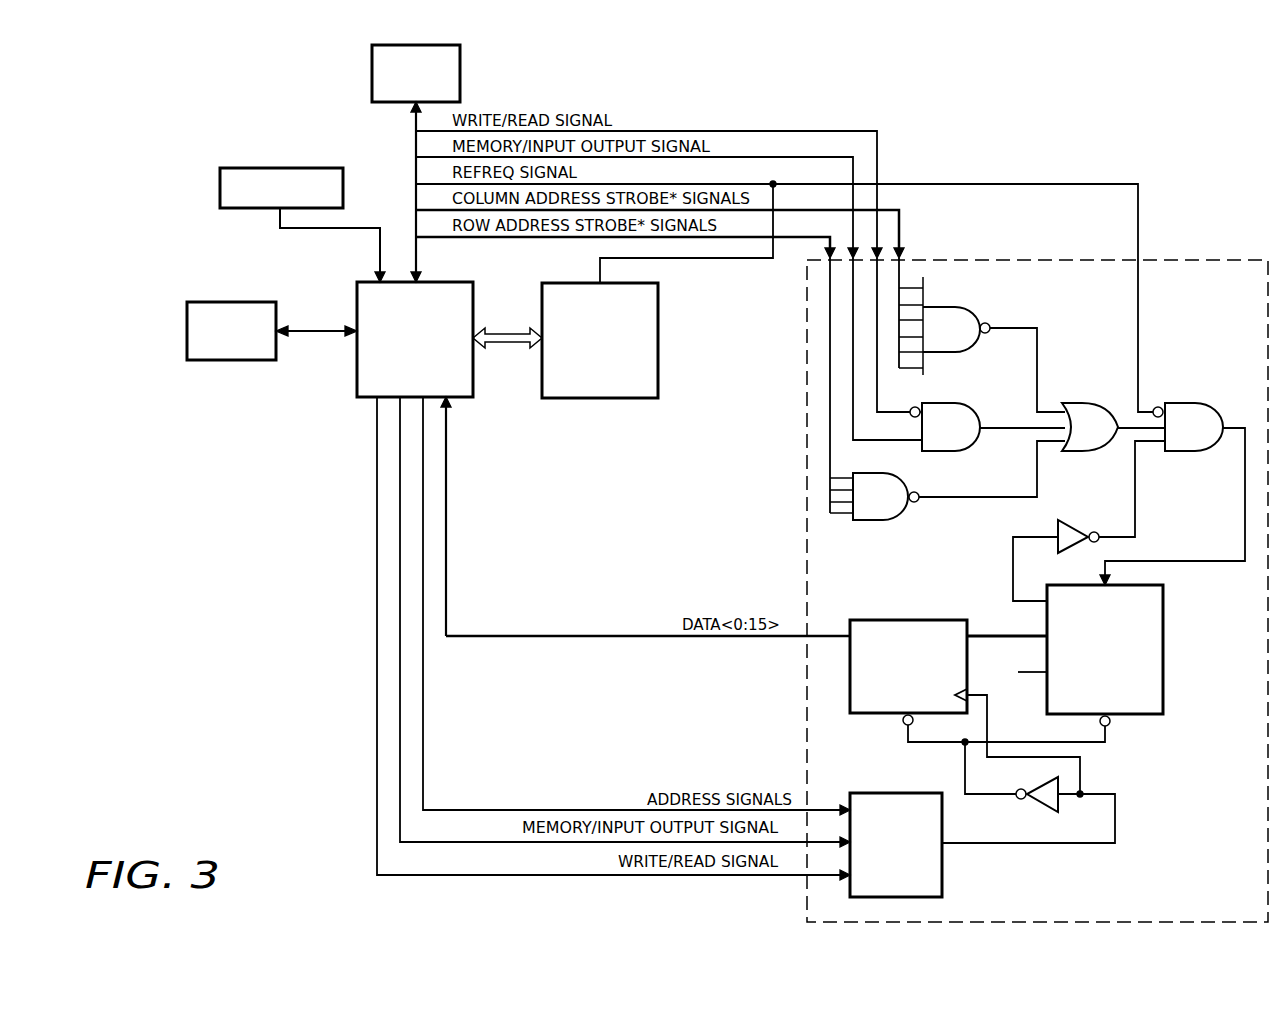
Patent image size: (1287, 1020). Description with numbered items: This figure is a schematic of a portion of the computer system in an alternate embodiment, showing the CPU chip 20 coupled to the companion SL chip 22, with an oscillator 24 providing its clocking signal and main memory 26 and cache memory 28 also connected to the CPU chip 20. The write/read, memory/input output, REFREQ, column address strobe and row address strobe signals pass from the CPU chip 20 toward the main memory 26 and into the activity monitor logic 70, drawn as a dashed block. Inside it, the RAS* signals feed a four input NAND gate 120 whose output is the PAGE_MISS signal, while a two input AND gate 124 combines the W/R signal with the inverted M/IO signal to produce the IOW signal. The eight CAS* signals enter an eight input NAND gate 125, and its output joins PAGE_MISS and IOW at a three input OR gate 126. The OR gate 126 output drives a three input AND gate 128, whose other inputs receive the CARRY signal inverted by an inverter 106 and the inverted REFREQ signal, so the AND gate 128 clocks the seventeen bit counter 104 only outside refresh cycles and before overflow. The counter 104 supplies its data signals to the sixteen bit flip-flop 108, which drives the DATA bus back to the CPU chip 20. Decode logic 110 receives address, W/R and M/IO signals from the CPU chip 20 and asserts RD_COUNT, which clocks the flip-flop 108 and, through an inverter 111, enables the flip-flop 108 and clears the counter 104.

The 386 SL CPU chip 20 is at (357, 377).
The 82360 SL chip 22 is at (658, 373).
The oscillator 24 is at (263, 168).
The main memory 26 is at (460, 62).
The cache memory 28 is at (232, 301).
The activity monitor logic 70 is at (1198, 260).
The 17 bit counter 104 is at (1165, 612).
The inverter 106 is at (1072, 520).
The 16 bit flip-flop 108 is at (893, 620).
The decode logic 110 is at (942, 880).
The inverter 111 is at (1035, 782).
The four input NAND gate 120 is at (885, 521).
The two input AND gate 124 is at (963, 402).
The eight input NAND gate 125 is at (975, 305).
The three input OR gate 126 is at (1080, 402).
The three input AND gate 128 is at (1185, 402).